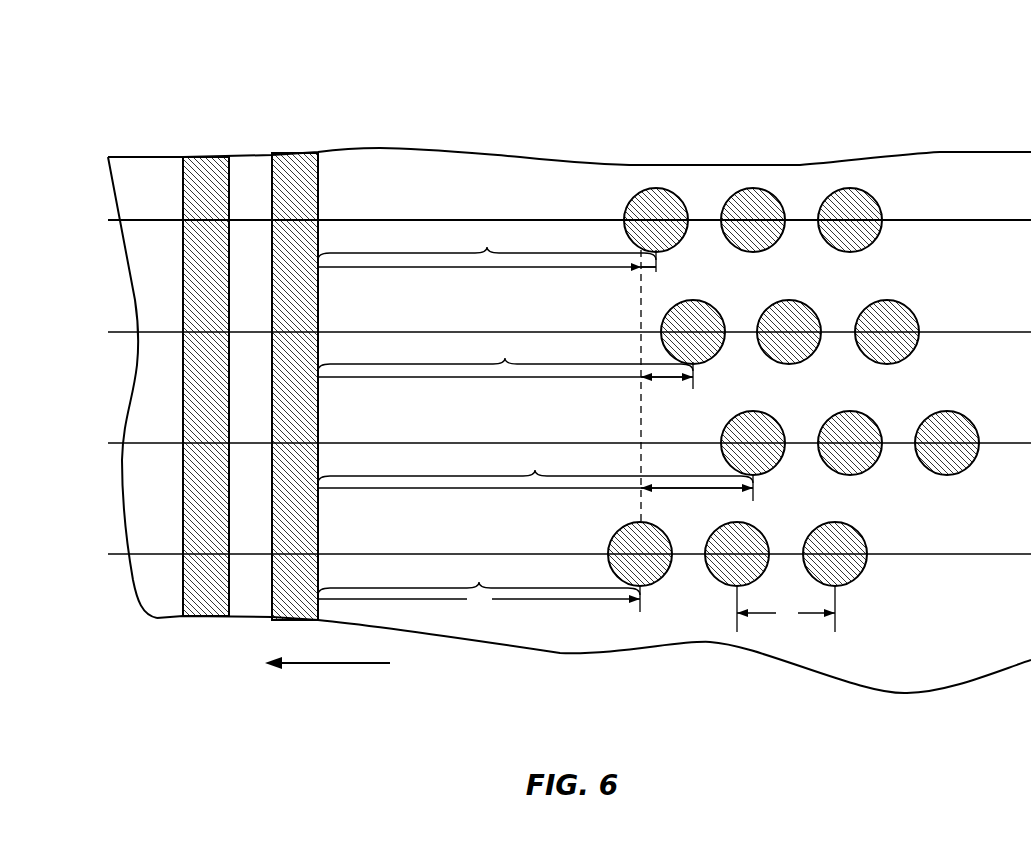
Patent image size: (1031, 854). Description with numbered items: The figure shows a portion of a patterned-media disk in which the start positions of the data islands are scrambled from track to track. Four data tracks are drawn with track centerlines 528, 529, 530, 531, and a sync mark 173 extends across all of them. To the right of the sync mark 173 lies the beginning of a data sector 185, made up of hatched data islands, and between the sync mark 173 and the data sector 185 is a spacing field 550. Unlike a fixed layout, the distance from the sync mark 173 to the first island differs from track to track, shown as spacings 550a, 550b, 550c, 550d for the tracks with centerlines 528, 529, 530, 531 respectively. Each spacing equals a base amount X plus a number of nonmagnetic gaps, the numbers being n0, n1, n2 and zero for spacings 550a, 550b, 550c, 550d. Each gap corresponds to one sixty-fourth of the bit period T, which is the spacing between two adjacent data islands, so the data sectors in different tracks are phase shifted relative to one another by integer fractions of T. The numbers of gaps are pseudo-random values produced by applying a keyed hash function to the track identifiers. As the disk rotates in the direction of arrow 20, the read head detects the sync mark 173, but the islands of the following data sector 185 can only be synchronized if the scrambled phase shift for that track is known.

The sync mark 173 is at (315, 135).
The spacing field 550 is at (317, 135).
The data sector 185 is at (638, 137).
The track centerline 528 is at (108, 222).
The track centerline 529 is at (108, 334).
The track centerline 530 is at (108, 445).
The track centerline 531 is at (108, 556).
The spacing 550a is at (487, 247).
The spacing 550b is at (505, 362).
The spacing 550c is at (535, 473).
The spacing 550d is at (479, 584).
The number of nonmagnetic gaps n0 is at (656, 268).
The number of nonmagnetic gaps n1 is at (660, 380).
The number of nonmagnetic gaps n2 is at (668, 491).
The bit period T is at (786, 609).
The base spacing amount X is at (479, 600).
The direction of disk rotation 20 is at (348, 665).